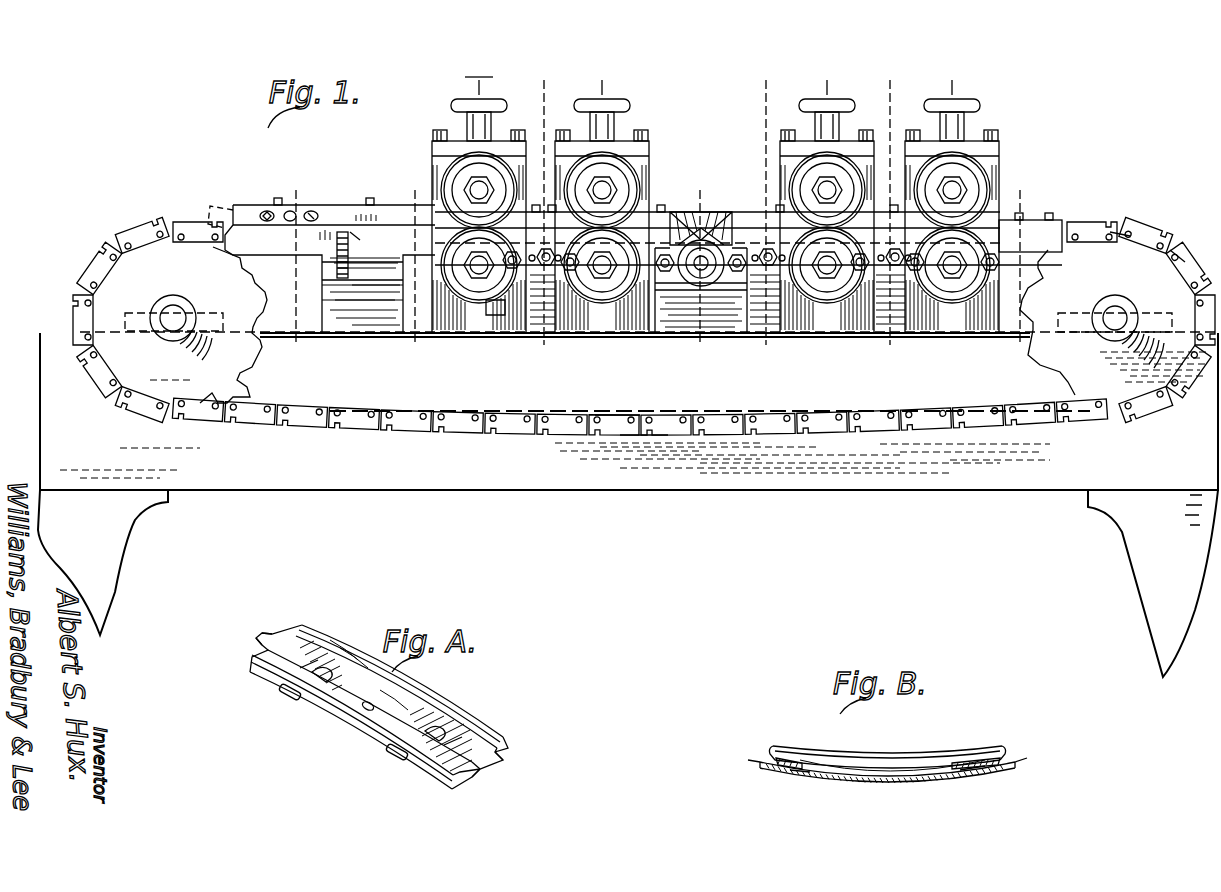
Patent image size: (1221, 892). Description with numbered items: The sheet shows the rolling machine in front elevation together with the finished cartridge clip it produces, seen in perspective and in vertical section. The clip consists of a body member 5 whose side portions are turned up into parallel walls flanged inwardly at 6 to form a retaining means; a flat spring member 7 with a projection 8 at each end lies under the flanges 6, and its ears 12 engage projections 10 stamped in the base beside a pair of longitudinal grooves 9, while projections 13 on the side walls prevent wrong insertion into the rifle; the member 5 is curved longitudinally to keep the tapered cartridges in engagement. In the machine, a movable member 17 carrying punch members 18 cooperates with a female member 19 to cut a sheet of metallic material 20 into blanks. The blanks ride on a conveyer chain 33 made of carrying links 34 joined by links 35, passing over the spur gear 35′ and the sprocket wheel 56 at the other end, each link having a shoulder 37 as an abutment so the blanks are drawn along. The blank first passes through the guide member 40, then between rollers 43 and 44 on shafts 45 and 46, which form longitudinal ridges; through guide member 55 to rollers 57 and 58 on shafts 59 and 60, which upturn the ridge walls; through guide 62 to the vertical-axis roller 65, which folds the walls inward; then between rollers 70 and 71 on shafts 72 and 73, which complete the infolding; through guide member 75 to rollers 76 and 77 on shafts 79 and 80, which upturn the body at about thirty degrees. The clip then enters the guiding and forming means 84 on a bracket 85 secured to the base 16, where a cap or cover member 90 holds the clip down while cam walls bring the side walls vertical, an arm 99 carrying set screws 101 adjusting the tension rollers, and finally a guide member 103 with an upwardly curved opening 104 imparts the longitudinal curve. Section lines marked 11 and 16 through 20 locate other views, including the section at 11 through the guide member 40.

In FIG. A, the body member 5 is at (360, 738).
In FIG. B, the body member 5 is at (872, 783).
In FIG. 1, the inwardly turned flanges 6 is at (966, 364).
In FIG. A, the inwardly turned flanges 6 is at (470, 760).
In FIG. B, the inwardly turned flanges 6 is at (800, 758).
In FIG. 1, the flat spring member 7 is at (841, 364).
In FIG. A, the flat spring member 7 is at (420, 718).
In FIG. B, the flat spring member 7 is at (872, 768).
In FIG. A, the projection 8 is at (262, 634).
In FIG. B, the projection 8 is at (755, 764).
In FIG. 1, the longitudinal grooves 9 is at (616, 364).
In FIG. A, the longitudinal grooves 9 is at (510, 762).
In FIG. 1, the projections 10 is at (493, 364).
In FIG. A, the projections 10 is at (318, 678).
In FIG. B, the projections 10 is at (806, 776).
In FIG. 1, the section line 11 is at (1034, 364).
In FIG. 1, the ears 12 is at (904, 364).
In FIG. A, the ears 12 is at (300, 668).
In FIG. B, the ears 12 is at (958, 763).
In FIG. 1, the projections 13 is at (780, 364).
In FIG. A, the projections 13 is at (286, 696).
In FIG. 1, the base 16 is at (714, 364).
In FIG. 1, the movable member 17 is at (558, 364).
In FIG. 1, the punch members 18 is at (479, 216).
In FIG. 1, the female member 19 is at (429, 364).
In FIG. 1, the sheet of metallic material 20 is at (310, 364).
In FIG. 1, the conveyer chain 33 is at (517, 437).
In FIG. 1, the carrying links 34 is at (672, 434).
In FIG. 1, the connecting links 35 is at (1128, 234).
In FIG. 1, the spur gear 35′ is at (1085, 255).
In FIG. 1, the shoulder 37 is at (1176, 256).
In FIG. 1, the guide member 40 is at (1050, 228).
In FIG. 1, the roller 43 is at (985, 188).
In FIG. 1, the roller 44 is at (953, 268).
In FIG. 1, the rotatable shaft 45 is at (955, 188).
In FIG. 1, the rotatable shaft 46 is at (991, 270).
In FIG. 1, the guide member 55 is at (914, 270).
In FIG. 1, the sprocket wheel 56 is at (238, 362).
In FIG. 1, the roller 57 is at (846, 166).
In FIG. 1, the roller 58 is at (856, 270).
In FIG. 1, the rotatable shaft 59 is at (825, 188).
In FIG. 1, the rotatable shaft 60 is at (827, 268).
In FIG. 1, the guide 62 is at (752, 224).
In FIG. 1, the roller 65 is at (712, 212).
In FIG. 1, the roller 70 is at (638, 173).
In FIG. 1, the roller 71 is at (605, 268).
In FIG. 1, the rotatable shaft 72 is at (605, 188).
In FIG. 1, the rotatable shaft 73 is at (575, 270).
In FIG. 1, the guide member 75 is at (518, 268).
In FIG. 1, the roller 76 is at (519, 170).
In FIG. 1, the roller 77 is at (482, 268).
In FIG. 1, the rotatable shaft 79 is at (482, 188).
In FIG. 1, the rotatable shaft 80 is at (496, 316).
In FIG. 1, the guiding and forming means 84 is at (388, 199).
In FIG. 1, the bracket 85 is at (380, 285).
In FIG. 1, the cap or cover member 90 is at (349, 210).
In FIG. 1, the arm 99 is at (313, 211).
In FIG. 1, the set screws 101 is at (267, 211).
In FIG. 1, the guide member 103 is at (288, 211).
In FIG. 1, the curved opening 104 is at (228, 212).